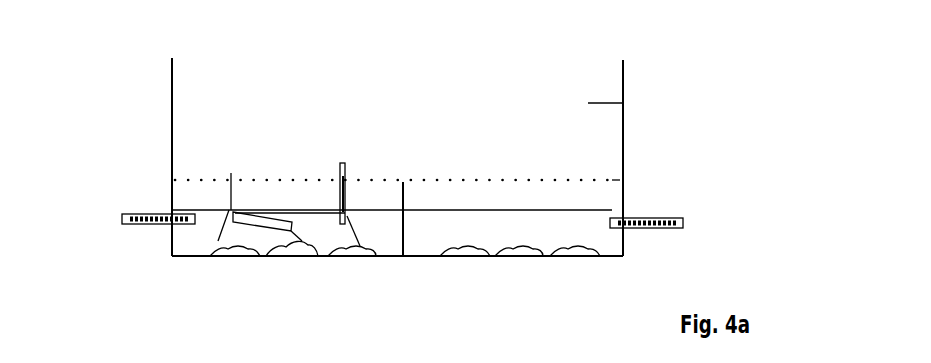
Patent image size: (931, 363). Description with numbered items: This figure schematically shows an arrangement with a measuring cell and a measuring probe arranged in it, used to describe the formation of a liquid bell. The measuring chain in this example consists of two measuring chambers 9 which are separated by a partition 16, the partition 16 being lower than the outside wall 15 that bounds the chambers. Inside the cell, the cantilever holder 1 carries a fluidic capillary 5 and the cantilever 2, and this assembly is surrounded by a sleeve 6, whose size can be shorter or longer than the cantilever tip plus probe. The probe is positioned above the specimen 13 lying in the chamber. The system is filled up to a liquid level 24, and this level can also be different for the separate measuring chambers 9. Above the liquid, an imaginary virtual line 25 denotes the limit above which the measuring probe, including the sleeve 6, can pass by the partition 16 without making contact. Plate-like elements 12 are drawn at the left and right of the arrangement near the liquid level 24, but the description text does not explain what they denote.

The cantilever holder 1 is at (278, 188).
The cantilever 2 is at (287, 248).
The fluidic capillary 5 is at (341, 163).
The sleeve 6 is at (218, 228).
The measuring chambers 9 is at (623, 103).
The plate / inlet-outlet element 12 is at (123, 214).
The specimen 13 is at (625, 256).
The outside wall 15 is at (172, 135).
The partition 16 is at (403, 183).
The liquid level 24 is at (612, 211).
The virtual line 25 is at (620, 180).